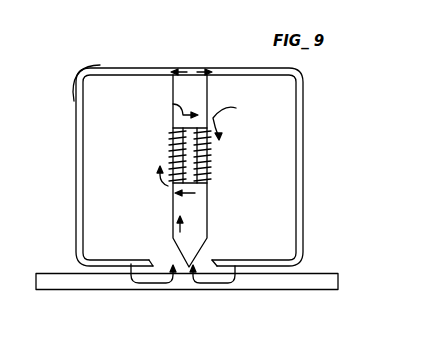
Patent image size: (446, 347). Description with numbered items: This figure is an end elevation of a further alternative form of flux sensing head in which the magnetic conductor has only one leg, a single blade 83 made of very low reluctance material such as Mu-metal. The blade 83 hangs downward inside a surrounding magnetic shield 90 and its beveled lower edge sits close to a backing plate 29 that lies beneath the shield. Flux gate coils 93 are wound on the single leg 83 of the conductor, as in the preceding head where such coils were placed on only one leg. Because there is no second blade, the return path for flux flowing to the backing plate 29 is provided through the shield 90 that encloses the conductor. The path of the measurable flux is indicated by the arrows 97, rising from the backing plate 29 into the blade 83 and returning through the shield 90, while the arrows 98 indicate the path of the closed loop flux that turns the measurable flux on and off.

The magnetic shield 90 is at (254, 69).
The mounting plate 29 is at (276, 282).
The blade 83 is at (207, 213).
The flux gate coils 93 is at (168, 151).
The arrows indicating closed loop flux path 98 is at (173, 104).
The arrows indicating measurable flux path 97 is at (77, 76).